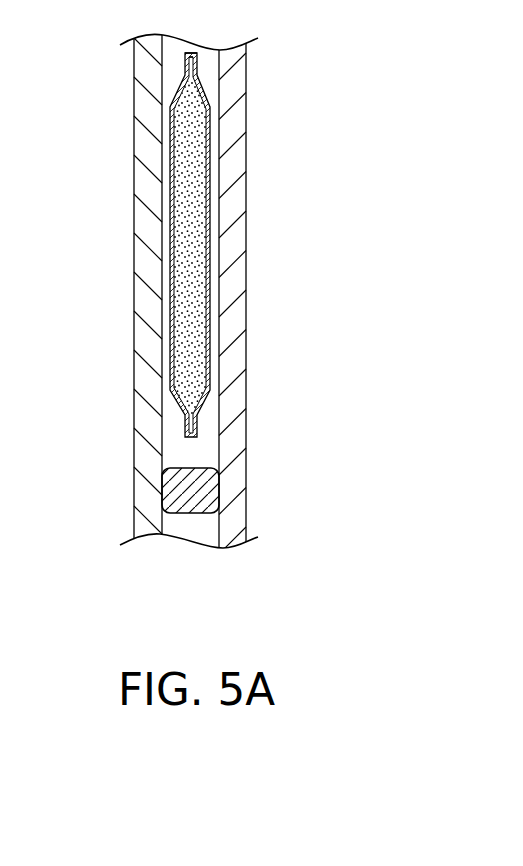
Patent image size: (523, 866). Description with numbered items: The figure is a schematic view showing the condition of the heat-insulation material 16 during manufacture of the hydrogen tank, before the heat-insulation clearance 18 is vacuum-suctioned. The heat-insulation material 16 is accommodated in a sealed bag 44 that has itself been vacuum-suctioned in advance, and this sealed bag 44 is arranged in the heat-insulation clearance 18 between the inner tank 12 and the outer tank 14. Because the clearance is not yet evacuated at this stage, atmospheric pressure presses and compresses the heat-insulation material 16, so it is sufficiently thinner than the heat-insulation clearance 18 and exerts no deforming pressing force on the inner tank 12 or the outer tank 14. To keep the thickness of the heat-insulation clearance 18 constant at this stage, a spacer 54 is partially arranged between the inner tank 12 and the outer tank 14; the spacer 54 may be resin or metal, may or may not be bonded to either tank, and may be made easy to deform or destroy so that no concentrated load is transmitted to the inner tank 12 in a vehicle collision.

The inner tank 12 is at (134, 412).
The outer tank 14 is at (246, 412).
The heat-insulation material 16 is at (185, 218).
The heat-insulation clearance 18 is at (178, 71).
The sealed bag 44 is at (210, 272).
The spacer 54 is at (208, 487).